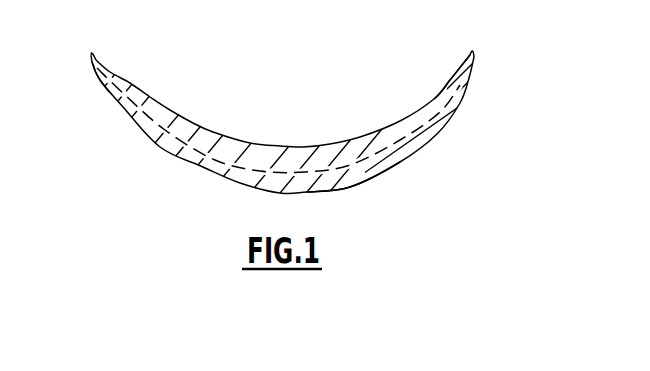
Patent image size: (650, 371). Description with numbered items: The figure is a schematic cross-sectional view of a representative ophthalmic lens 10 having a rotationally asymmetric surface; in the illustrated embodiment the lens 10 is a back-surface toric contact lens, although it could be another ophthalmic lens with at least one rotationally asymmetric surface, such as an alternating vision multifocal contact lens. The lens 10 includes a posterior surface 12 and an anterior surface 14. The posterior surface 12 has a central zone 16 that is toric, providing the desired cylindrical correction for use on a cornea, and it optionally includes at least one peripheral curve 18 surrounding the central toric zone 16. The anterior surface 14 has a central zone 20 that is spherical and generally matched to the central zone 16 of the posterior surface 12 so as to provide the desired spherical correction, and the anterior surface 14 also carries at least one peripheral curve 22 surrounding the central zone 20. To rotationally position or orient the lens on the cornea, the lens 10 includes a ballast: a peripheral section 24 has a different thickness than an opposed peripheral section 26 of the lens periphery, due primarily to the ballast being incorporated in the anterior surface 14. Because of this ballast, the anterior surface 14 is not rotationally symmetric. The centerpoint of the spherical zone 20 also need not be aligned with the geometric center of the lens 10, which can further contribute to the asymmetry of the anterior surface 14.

The ophthalmic lens 10 is at (288, 134).
The posterior surface 12 is at (171, 111).
The anterior surface 14 is at (158, 146).
The central zone 16 is at (303, 147).
The peripheral curve 18 is at (450, 80).
The central zone 20 is at (350, 186).
The peripheral curve 22 is at (102, 81).
The peripheral section 24 is at (101, 64).
The opposed peripheral section 26 is at (470, 79).